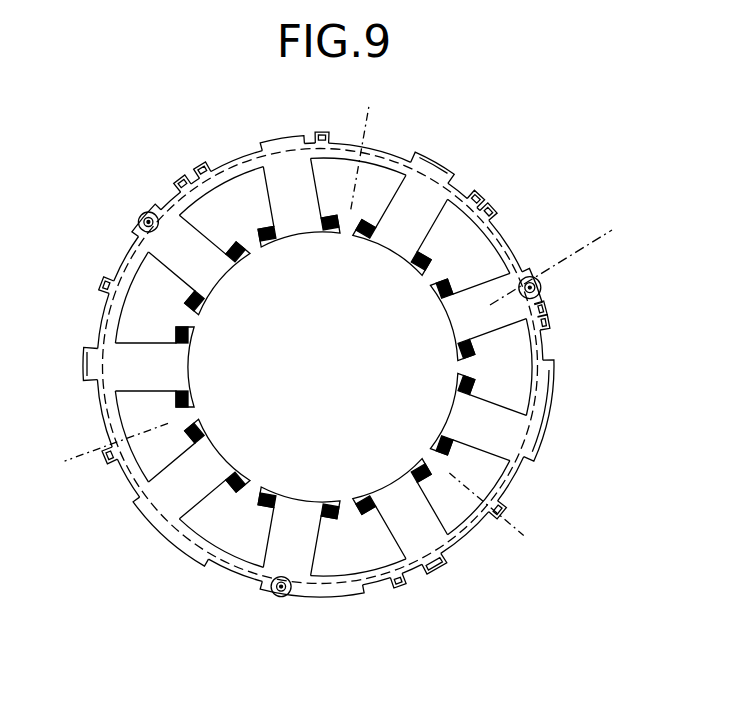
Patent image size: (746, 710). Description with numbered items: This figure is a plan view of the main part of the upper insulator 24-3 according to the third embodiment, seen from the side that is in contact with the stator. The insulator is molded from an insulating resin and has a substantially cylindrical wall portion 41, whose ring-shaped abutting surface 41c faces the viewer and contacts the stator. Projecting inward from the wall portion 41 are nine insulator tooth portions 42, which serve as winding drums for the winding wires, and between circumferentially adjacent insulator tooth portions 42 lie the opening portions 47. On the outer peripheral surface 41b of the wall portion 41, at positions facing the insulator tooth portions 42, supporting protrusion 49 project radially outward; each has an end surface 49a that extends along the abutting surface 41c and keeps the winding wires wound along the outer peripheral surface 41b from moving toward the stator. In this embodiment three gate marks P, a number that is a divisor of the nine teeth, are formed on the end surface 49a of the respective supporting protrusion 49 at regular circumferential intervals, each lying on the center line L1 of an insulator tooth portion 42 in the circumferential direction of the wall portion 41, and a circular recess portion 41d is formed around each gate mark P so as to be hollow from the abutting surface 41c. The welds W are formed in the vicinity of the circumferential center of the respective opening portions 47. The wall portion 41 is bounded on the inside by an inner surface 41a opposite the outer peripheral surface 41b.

The upper insulator 24-3 is at (540, 168).
The wall portion 41 is at (470, 527).
The yoke portion 41a is at (158, 533).
The outer peripheral surface 41b is at (188, 555).
The abutting surface 41c is at (258, 573).
The recess portion 41d is at (268, 600).
The insulator tooth portions 42 is at (296, 218).
The opening portions 47 is at (347, 222).
The supporting protrusion 49 is at (281, 136).
The end surface 49a is at (318, 595).
The gate marks P is at (131, 237).
The center line L1 is at (553, 256).
The welds W is at (354, 135).